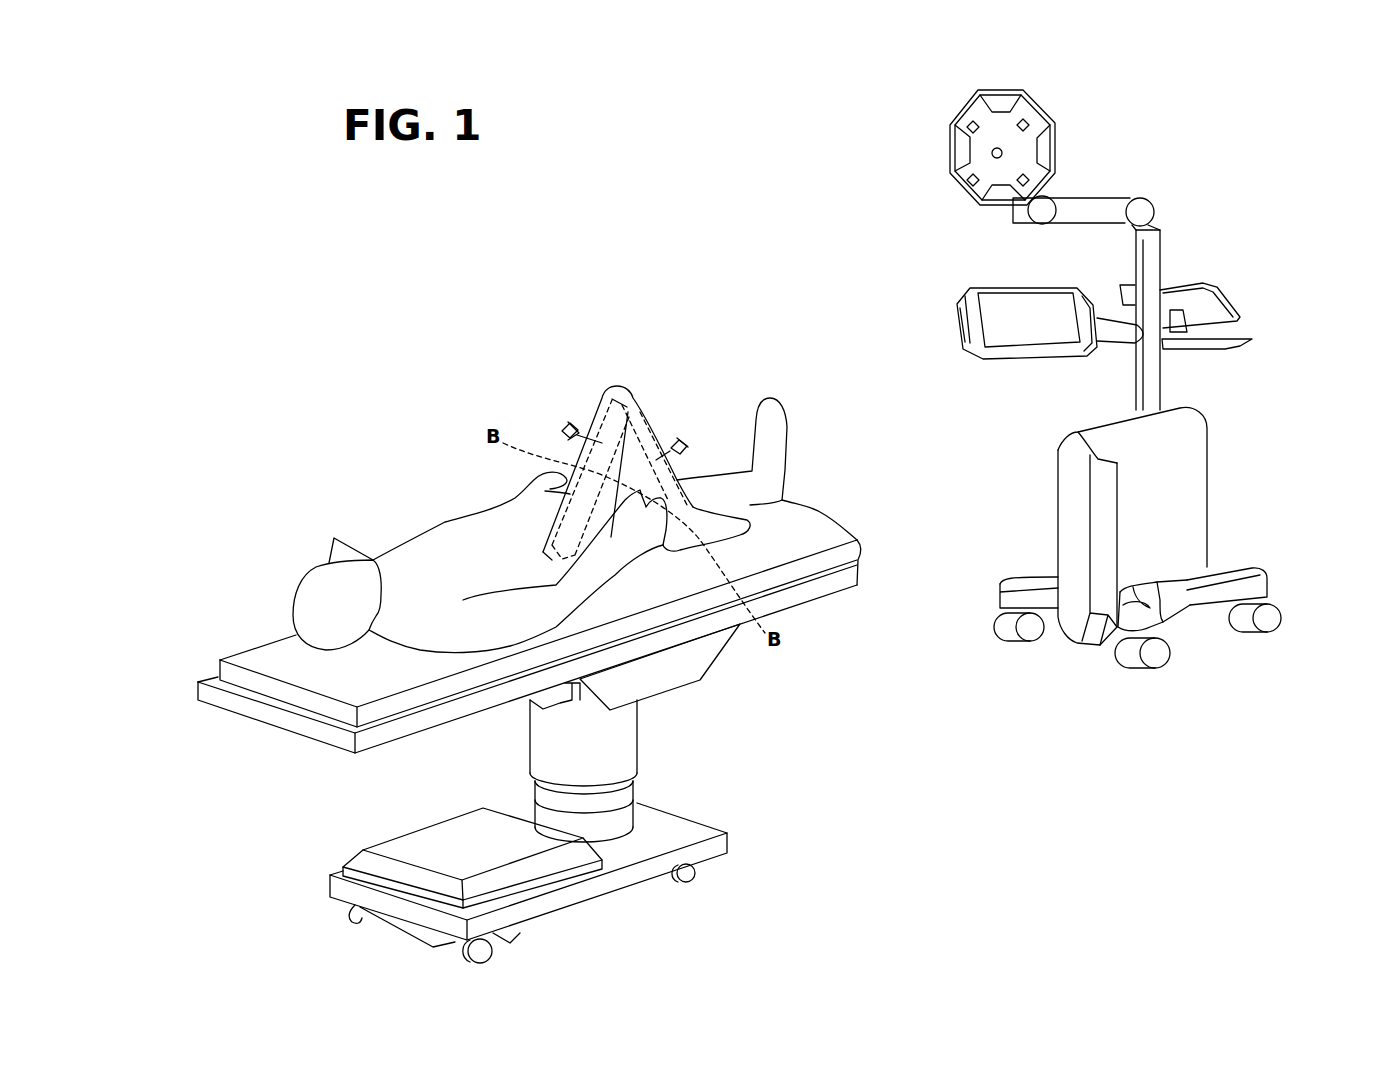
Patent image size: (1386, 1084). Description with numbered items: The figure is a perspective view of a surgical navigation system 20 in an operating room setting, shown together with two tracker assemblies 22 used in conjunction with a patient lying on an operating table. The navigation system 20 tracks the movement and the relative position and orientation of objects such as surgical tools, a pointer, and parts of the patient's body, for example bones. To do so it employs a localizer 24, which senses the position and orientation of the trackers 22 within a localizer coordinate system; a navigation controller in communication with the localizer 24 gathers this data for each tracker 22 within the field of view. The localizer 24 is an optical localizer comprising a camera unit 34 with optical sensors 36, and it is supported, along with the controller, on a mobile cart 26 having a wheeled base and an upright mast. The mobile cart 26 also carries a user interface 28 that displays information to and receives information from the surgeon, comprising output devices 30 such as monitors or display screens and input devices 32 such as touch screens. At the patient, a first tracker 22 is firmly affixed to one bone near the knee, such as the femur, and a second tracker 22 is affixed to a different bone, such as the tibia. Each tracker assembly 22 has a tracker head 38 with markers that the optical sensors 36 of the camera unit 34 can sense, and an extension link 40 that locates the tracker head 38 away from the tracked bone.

The navigation system 20 is at (1208, 177).
The tracker 22 is at (556, 427).
The localizer 24 is at (1023, 137).
The mobile cart 26 is at (1262, 506).
The user interface 28 is at (1139, 324).
The output device 30 is at (1094, 331).
The input device 32 is at (1196, 282).
The camera unit 34 is at (998, 92).
The optical sensor 36 is at (967, 179).
The tracker head 38 is at (568, 422).
The extension link 40 is at (600, 398).